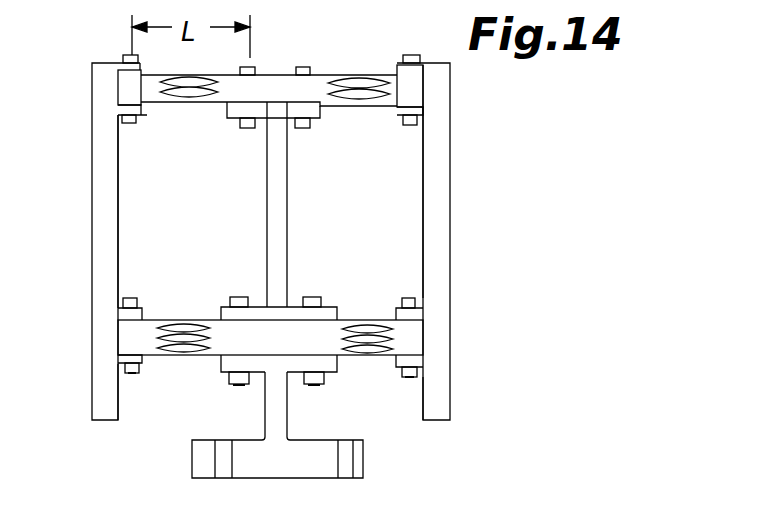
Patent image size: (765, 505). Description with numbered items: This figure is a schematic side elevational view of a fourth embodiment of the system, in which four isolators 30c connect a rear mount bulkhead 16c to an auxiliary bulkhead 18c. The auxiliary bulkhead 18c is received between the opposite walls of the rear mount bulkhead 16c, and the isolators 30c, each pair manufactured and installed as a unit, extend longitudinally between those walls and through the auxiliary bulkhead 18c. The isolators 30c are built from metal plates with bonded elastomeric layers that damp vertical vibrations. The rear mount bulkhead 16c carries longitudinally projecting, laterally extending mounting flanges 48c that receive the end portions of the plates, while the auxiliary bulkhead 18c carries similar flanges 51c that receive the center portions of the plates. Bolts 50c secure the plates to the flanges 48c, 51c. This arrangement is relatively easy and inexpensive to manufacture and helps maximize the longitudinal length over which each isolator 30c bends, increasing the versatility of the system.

The rear mount bulkhead 16c is at (441, 150).
The auxiliary bulkhead 18c is at (288, 412).
The isolators 30c is at (190, 107).
The mounting flanges 48c is at (137, 298).
The bolts 50c is at (303, 67).
The flanges 51c is at (228, 110).